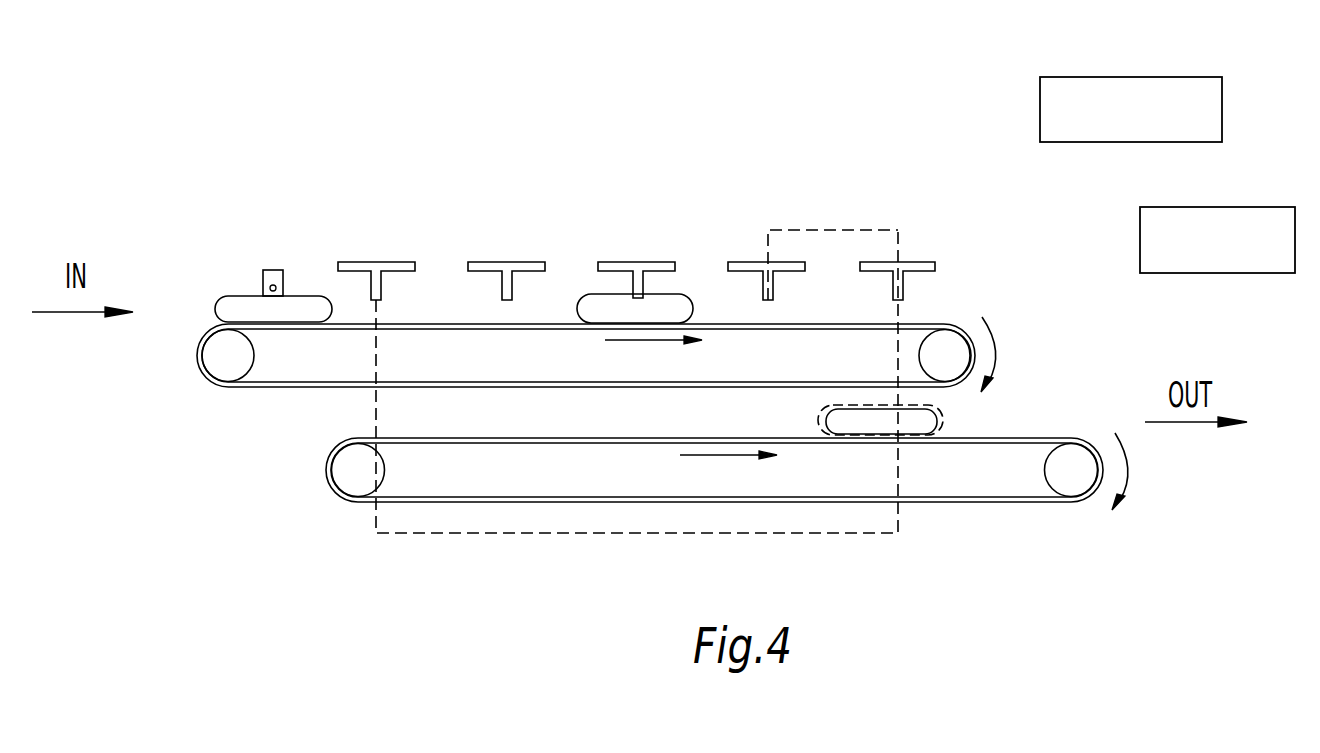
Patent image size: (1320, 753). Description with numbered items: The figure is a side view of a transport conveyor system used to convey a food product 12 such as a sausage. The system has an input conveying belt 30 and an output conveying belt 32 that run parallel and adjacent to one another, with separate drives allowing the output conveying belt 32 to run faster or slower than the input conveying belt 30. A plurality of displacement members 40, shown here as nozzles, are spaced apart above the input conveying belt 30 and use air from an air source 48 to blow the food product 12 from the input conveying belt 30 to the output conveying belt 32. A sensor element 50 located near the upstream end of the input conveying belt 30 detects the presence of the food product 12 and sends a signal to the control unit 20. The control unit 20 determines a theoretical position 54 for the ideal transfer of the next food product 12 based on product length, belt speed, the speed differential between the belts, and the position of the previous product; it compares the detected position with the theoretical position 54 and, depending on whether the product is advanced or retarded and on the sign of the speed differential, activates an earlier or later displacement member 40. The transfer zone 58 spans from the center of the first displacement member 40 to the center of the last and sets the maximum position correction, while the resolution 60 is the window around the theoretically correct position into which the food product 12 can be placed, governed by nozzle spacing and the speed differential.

The food product 12 is at (237, 296).
The control unit 20 is at (1260, 207).
The input conveying belt 30 is at (943, 322).
The output conveying belt 32 is at (1072, 438).
The displacement member 40 is at (403, 262).
The air source 48 is at (1187, 77).
The sensor element 50 is at (273, 270).
The theoretical position 54 is at (605, 296).
The transfer zone 58 is at (660, 527).
The resolution 60 is at (843, 238).